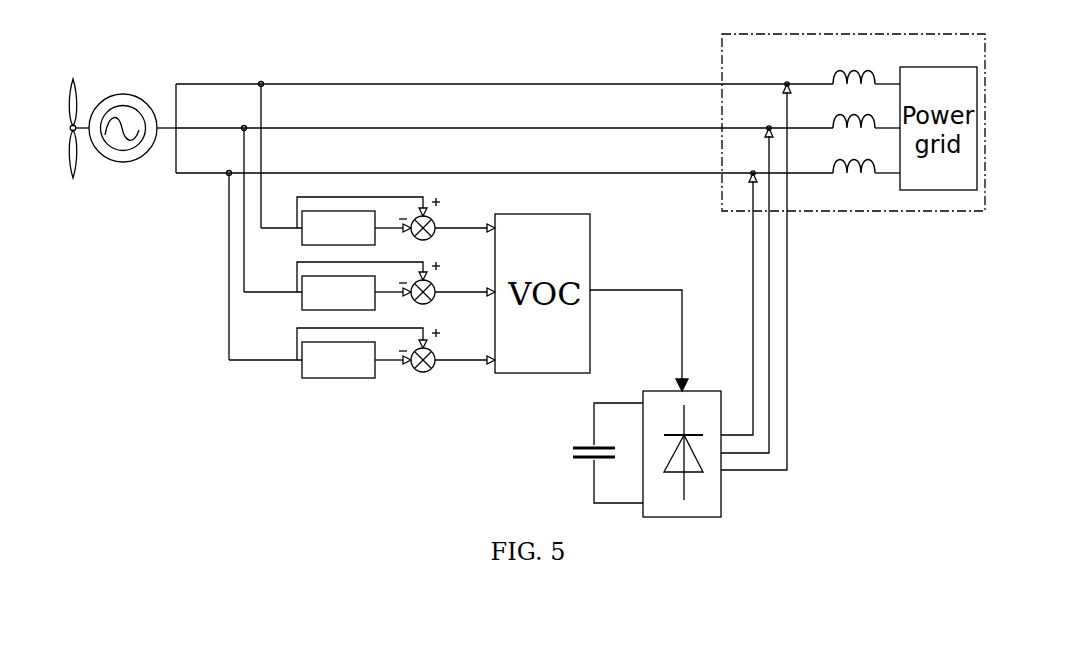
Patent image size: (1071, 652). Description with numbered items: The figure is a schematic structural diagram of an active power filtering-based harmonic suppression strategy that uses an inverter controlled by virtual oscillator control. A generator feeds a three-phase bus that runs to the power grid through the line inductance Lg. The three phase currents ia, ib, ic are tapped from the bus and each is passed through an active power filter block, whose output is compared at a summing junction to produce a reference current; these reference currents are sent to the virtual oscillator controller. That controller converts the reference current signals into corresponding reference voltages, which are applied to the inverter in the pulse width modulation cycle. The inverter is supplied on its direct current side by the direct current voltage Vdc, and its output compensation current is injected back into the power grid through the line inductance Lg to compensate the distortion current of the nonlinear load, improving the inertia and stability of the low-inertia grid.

The phase a current input with adaptive filter (APF) path ia is at (382, 220).
The phase b current input with adaptive filter (APF) path ib is at (382, 284).
The phase c current input with adaptive filter (APF) path ic is at (382, 352).
The direct current voltage Vdc is at (587, 453).
The line inductance Lg is at (854, 104).